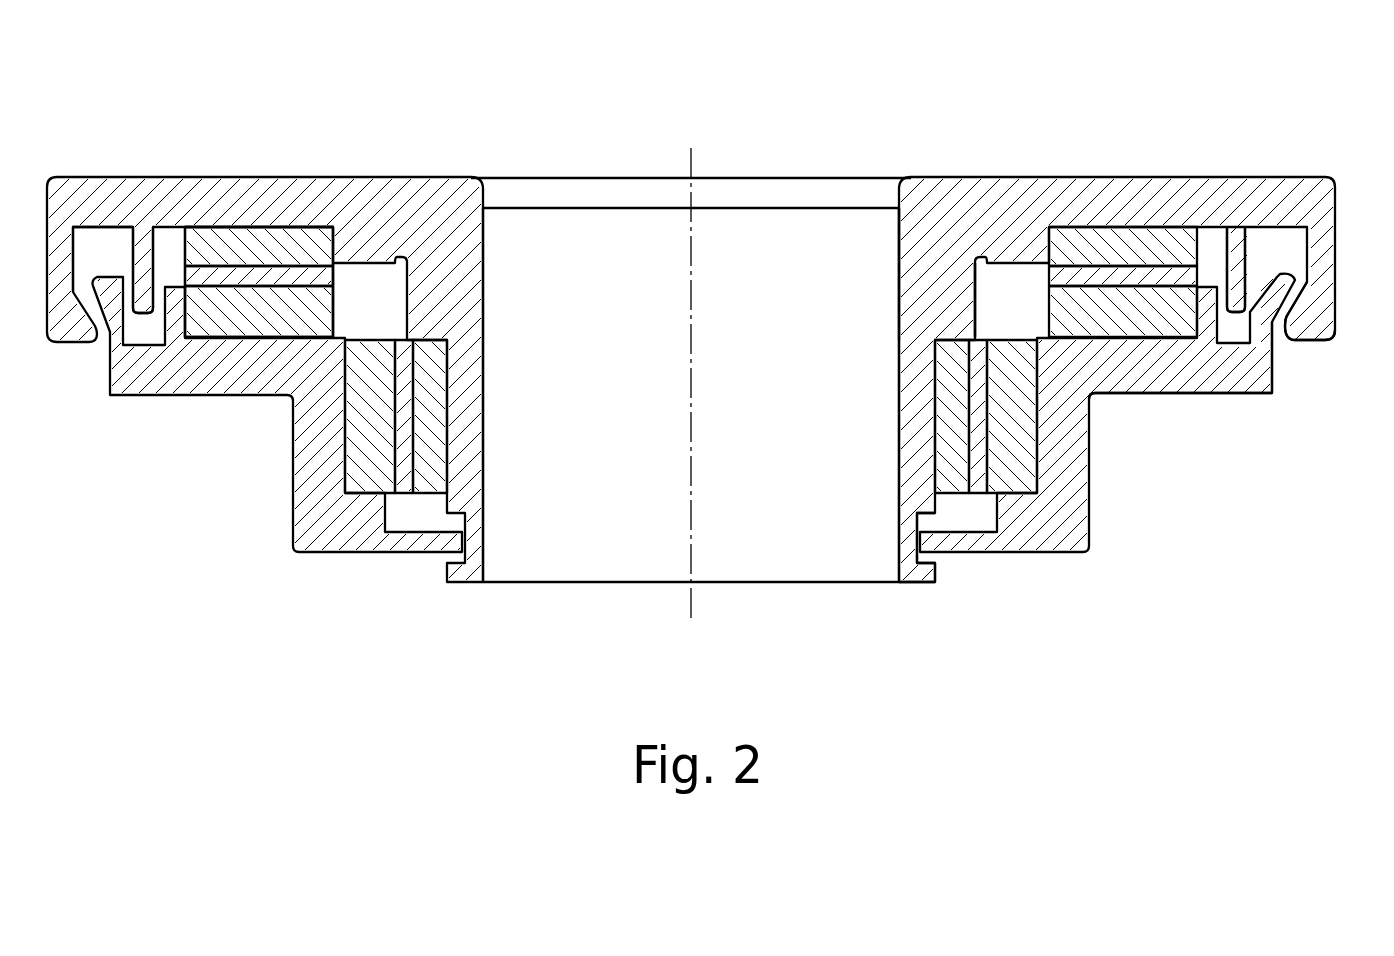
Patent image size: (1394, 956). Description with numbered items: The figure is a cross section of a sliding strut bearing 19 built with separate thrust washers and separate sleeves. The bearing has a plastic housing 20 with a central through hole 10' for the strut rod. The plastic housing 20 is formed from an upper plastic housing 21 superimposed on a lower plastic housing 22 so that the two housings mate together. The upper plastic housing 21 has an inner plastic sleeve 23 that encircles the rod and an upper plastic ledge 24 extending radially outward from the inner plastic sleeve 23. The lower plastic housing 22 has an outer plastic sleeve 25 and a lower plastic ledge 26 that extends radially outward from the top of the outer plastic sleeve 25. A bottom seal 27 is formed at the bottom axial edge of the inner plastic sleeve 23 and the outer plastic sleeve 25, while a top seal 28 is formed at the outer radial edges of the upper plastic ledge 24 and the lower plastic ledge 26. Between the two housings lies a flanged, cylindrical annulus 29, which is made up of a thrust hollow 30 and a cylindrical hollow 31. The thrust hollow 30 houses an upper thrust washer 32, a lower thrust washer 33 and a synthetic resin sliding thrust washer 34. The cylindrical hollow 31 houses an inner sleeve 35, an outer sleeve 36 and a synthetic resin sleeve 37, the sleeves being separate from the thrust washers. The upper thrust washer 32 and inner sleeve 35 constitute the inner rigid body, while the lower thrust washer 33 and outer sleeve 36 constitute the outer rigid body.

The through hole 10' is at (728, 384).
The sliding strut bearing 19 is at (470, 668).
The plastic housing 20 is at (1161, 119).
The upper plastic housing 21 is at (984, 198).
The lower plastic housing 22 is at (1078, 400).
The inner plastic sleeve 23 is at (930, 272).
The upper plastic ledge 24 is at (1242, 202).
The outer plastic sleeve 25 is at (1052, 495).
The lower plastic ledge 26 is at (1180, 368).
The bottom seal 27 is at (968, 568).
The top seal 28 is at (1307, 365).
The flanged, cylindrical annulus 29 is at (388, 316).
The thrust hollow 30 is at (167, 247).
The cylindrical hollow 31 is at (428, 518).
The upper thrust washer 32 is at (249, 269).
The lower thrust washer 33 is at (289, 312).
The synthetic resin sliding thrust washer 34 is at (297, 273).
The inner sleeve 35 is at (437, 358).
The outer sleeve 36 is at (355, 451).
The synthetic resin sleeve 37 is at (400, 497).